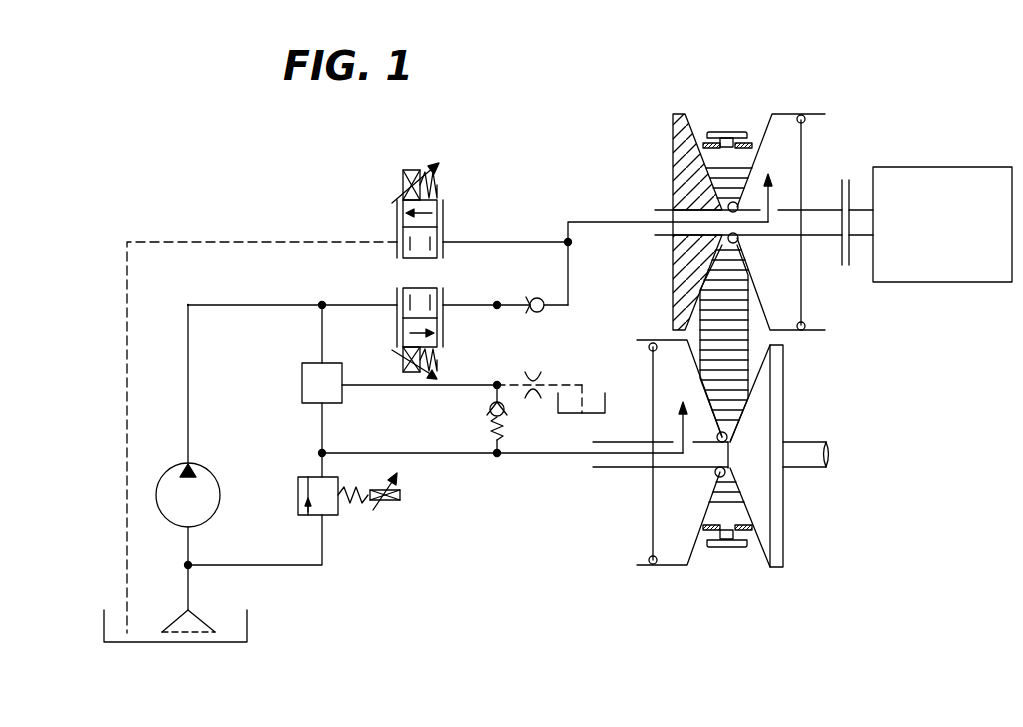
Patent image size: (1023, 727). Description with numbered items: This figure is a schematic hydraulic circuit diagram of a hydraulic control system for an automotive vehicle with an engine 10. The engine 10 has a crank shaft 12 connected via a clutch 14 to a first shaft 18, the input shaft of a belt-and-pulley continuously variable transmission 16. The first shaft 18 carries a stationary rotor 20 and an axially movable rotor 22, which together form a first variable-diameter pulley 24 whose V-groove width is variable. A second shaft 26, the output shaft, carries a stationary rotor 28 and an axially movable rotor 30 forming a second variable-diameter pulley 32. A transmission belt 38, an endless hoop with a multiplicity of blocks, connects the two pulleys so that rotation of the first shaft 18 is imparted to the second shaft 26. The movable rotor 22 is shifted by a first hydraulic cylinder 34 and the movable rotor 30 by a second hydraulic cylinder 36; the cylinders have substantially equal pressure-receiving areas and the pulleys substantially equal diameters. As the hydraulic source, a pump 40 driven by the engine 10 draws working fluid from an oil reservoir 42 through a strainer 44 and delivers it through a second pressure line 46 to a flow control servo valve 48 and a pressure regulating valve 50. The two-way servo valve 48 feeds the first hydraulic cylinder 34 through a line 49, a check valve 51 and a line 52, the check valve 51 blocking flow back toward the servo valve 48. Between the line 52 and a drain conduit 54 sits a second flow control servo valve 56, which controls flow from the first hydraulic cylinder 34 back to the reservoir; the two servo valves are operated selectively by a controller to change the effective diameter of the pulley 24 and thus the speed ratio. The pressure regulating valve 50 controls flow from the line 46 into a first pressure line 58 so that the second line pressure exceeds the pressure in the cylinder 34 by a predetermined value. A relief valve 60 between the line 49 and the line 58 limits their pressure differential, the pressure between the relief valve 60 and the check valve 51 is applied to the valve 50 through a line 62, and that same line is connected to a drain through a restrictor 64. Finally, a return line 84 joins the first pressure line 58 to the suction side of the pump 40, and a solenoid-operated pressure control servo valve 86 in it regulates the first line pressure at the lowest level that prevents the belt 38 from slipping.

The engine 10 is at (975, 174).
The crank shaft 12 is at (860, 215).
The clutch 14 is at (852, 253).
The continuously variable transmission 16 is at (858, 379).
The first shaft 18 is at (817, 213).
The stationary rotor 20 is at (676, 138).
The axially movable rotor 22 is at (780, 114).
The first variable-diameter pulley 24 is at (652, 139).
The second shaft 26 is at (820, 458).
The stationary rotor 28 is at (777, 553).
The axially movable rotor 30 is at (667, 566).
The second variable-diameter pulley 32 is at (803, 517).
The first hydraulic cylinder 34 is at (801, 287).
The second hydraulic cylinder 36 is at (660, 502).
The transmission belt 38 is at (740, 338).
The pump 40 is at (215, 485).
The oil reservoir 42 is at (248, 628).
The strainer 44 is at (202, 626).
The second pressure line 46 is at (243, 305).
The flow control servo valve 48 is at (384, 291).
The line 49 is at (471, 305).
The pressure regulating valve 50 is at (310, 363).
The check valve 51 is at (531, 299).
The line 52 is at (581, 222).
The drain conduit 54 is at (238, 242).
The flow control servo valve 56 is at (378, 211).
The first pressure line 58 is at (432, 455).
The relief valve 60 is at (490, 404).
The line 62 is at (422, 386).
The restrictor 64 is at (535, 372).
The return line 84 is at (307, 567).
The solenoid-operated pressure control servo valve 86 is at (346, 522).